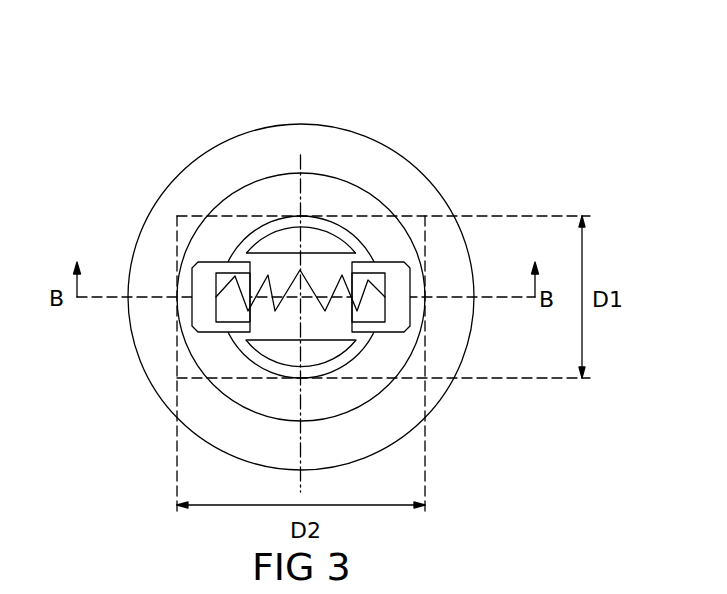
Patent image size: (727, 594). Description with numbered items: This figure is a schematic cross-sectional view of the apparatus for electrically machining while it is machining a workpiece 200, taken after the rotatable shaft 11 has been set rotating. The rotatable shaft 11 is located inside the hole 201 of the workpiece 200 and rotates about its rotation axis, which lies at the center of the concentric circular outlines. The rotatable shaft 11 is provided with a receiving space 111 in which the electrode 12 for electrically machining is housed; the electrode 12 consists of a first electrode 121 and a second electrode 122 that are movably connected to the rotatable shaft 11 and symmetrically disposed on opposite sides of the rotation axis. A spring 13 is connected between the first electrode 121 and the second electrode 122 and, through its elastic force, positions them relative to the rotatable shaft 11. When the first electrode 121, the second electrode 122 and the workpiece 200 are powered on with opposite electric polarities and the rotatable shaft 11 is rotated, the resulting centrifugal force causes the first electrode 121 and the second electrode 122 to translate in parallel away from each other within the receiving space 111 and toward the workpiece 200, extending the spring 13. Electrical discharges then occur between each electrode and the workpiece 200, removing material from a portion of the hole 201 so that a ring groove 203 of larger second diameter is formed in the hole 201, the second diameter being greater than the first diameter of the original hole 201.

The workpiece 200 is at (150, 202).
The ring groove 203 is at (186, 322).
The hole 201 is at (270, 365).
The rotatable shaft 11 is at (282, 245).
The receiving space 111 is at (330, 330).
The electrode 12 is at (413, 45).
The first electrode 121 is at (210, 273).
The second electrode 122 is at (393, 272).
The spring 13 is at (314, 293).